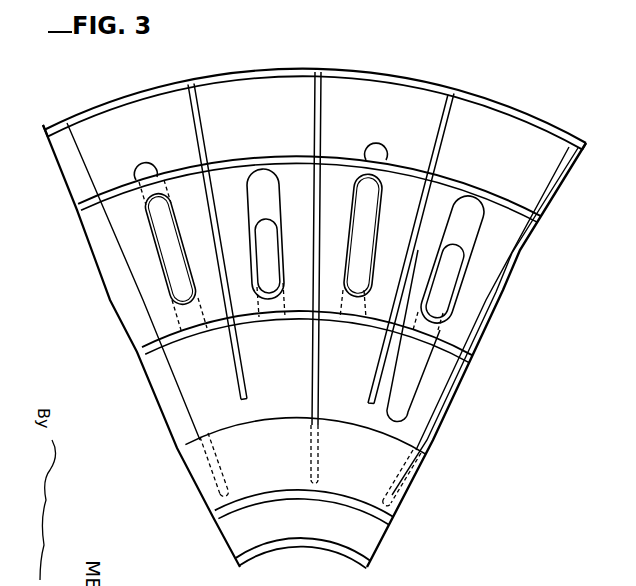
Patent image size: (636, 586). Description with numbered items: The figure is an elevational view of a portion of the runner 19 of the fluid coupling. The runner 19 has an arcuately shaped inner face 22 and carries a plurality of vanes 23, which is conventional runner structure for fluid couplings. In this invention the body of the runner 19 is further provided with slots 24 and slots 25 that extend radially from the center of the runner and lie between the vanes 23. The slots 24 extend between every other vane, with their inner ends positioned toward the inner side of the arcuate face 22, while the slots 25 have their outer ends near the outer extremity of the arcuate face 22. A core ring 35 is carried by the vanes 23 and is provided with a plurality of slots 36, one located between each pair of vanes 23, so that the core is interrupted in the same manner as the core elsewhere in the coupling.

The runner 19 is at (528, 99).
The arcuately shaped inner face 22 is at (532, 159).
The vanes 23 is at (439, 112).
The slots 24 is at (393, 402).
The slots 25 is at (366, 152).
The core ring 35 is at (508, 173).
The slots 36 is at (175, 217).